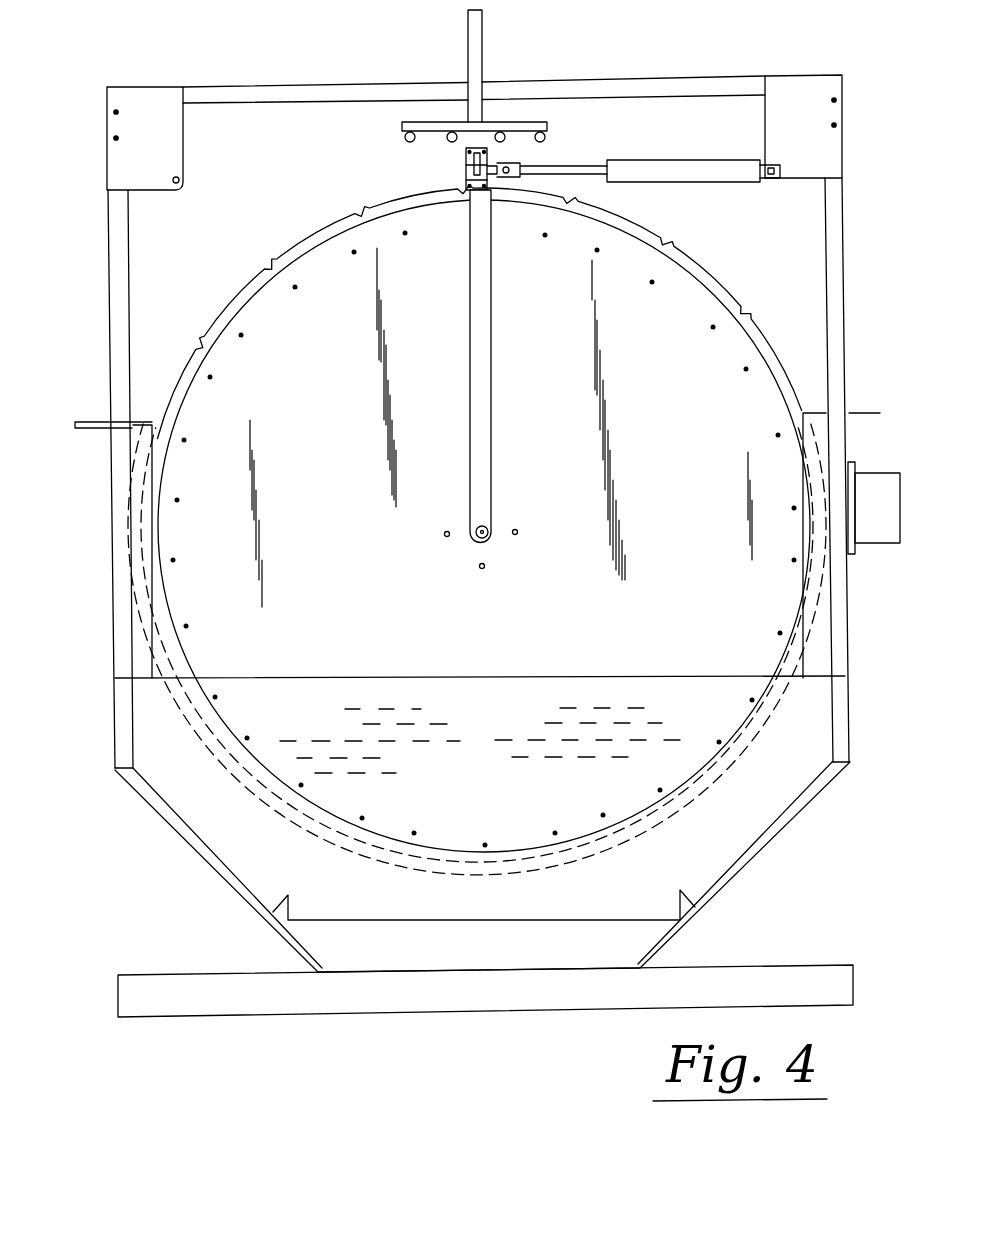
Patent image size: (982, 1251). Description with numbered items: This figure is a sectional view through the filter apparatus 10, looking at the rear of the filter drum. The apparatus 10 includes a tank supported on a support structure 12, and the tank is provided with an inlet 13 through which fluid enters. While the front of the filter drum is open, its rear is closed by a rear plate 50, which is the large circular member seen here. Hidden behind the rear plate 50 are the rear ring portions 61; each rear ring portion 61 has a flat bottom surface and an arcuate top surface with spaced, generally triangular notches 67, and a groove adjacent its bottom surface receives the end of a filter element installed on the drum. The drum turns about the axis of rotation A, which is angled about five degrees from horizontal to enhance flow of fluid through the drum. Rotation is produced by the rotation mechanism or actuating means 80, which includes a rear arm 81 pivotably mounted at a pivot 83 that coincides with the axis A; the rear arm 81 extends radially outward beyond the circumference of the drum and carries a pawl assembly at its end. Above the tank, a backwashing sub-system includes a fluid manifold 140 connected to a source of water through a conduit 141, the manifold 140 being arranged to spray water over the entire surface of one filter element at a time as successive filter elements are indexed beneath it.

The filter apparatus 10 is at (136, 855).
The support structure 12 is at (805, 963).
The inlet 13 is at (878, 476).
The rear plate 50 is at (343, 542).
The rear ring portion 61 is at (289, 255).
The notches 67 is at (246, 284).
The rotation mechanism 80 is at (462, 170).
The rear arm 81 is at (490, 391).
The pivot 83 is at (490, 543).
The axis of rotation A is at (488, 527).
The fluid manifold 140 is at (524, 118).
The conduit 141 is at (482, 37).